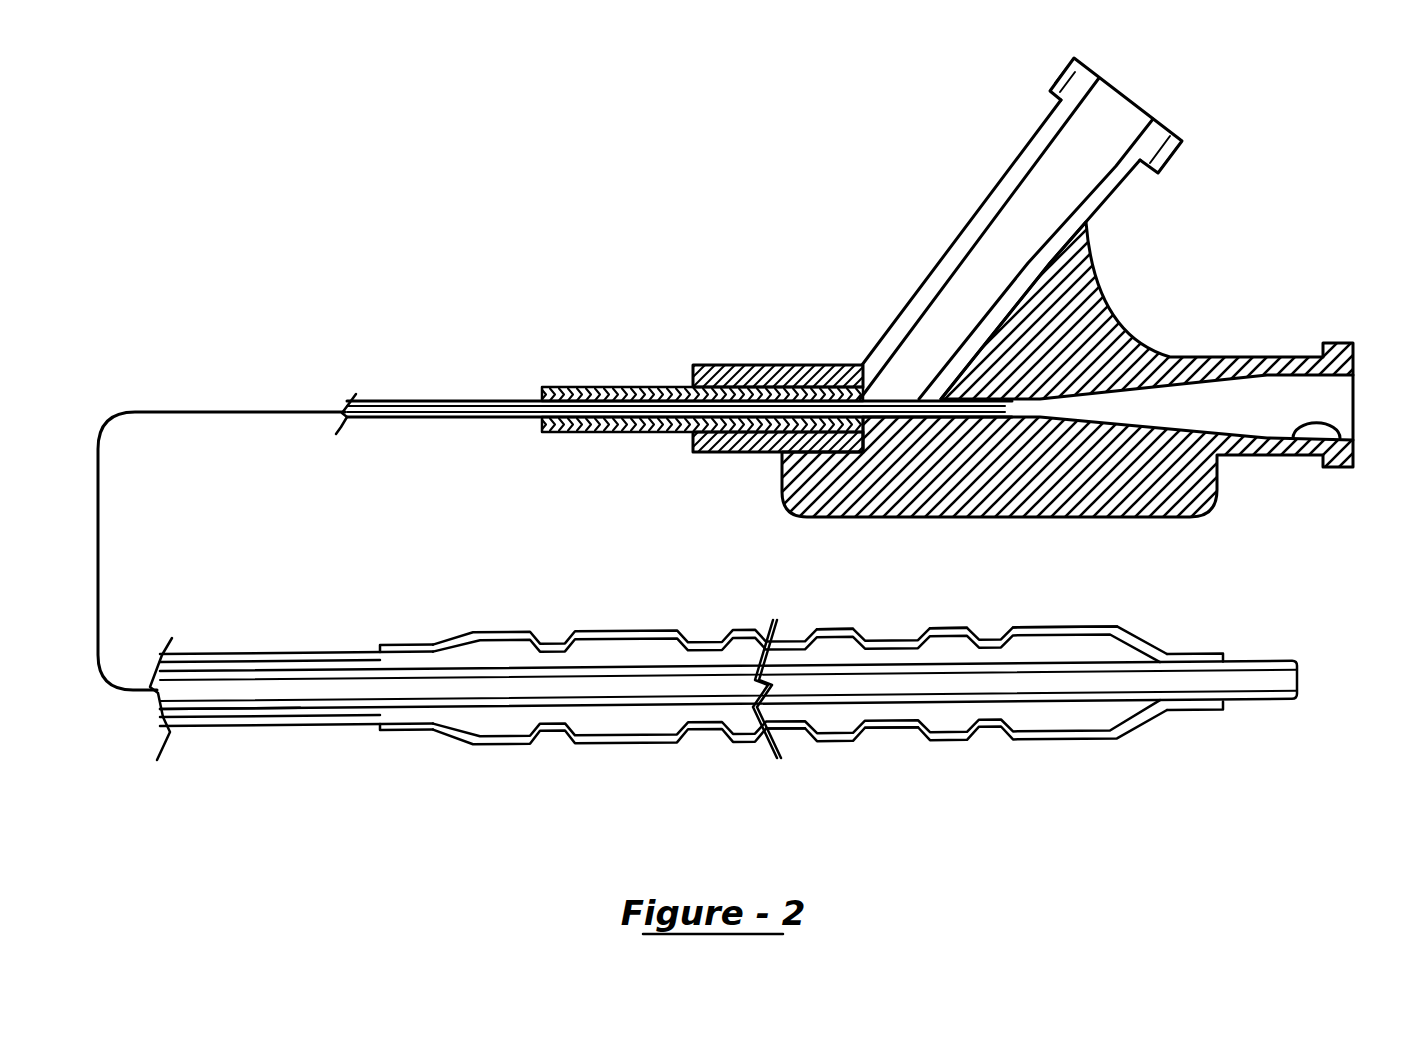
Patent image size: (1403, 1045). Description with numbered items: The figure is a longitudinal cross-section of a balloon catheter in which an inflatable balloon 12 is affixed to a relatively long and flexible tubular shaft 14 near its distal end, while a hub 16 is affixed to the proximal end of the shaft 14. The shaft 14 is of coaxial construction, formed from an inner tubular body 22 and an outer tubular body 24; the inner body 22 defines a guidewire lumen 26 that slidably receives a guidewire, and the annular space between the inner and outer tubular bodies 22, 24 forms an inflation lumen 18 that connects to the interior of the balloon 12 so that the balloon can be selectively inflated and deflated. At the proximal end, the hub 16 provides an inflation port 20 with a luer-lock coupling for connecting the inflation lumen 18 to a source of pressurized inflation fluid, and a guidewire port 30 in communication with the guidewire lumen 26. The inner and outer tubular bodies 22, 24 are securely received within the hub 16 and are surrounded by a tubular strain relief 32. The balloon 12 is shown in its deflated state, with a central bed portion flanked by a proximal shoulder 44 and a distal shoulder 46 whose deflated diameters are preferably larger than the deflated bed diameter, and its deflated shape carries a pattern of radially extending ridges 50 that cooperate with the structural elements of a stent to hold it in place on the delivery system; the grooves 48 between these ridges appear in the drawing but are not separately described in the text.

The inflatable balloon 12 is at (705, 745).
The tubular shaft 14 is at (445, 400).
The hub 16 is at (962, 233).
The inflation lumen 18 is at (225, 667).
The inflation port 20 is at (1132, 140).
The inner tubular body 22 is at (337, 712).
The outer tubular body 24 is at (340, 650).
The guidewire lumen 26 is at (252, 698).
The guidewire port 30 is at (1288, 442).
The tubular strain relief 32 is at (623, 387).
The proximal shoulder 44 is at (497, 630).
The distal shoulder 46 is at (1106, 626).
The balloon grooves 48 is at (900, 738).
The radially extending ridges 50 is at (953, 627).